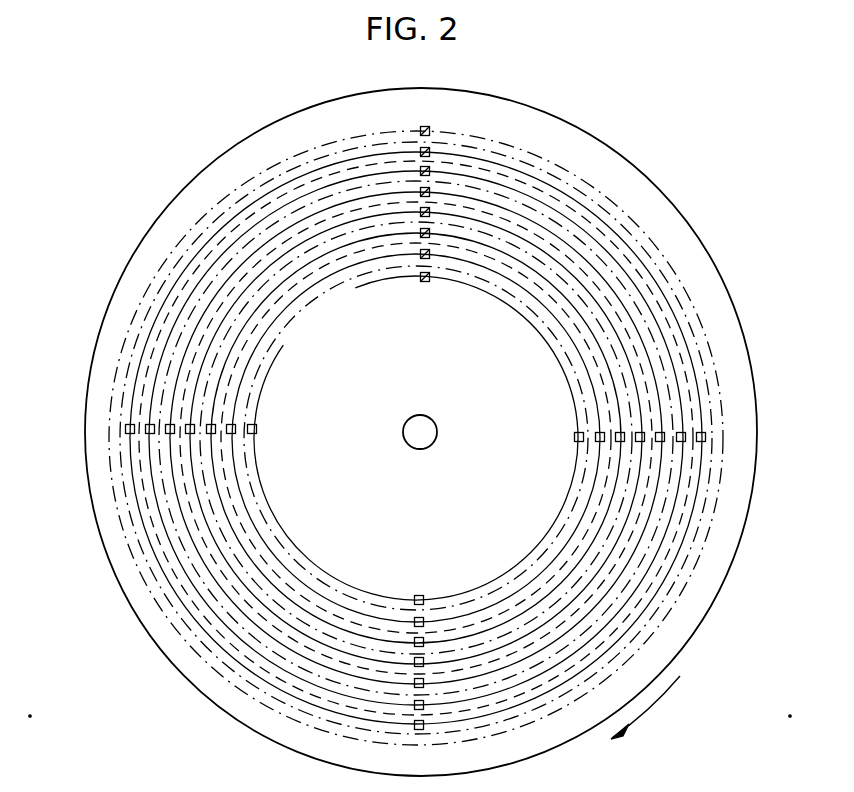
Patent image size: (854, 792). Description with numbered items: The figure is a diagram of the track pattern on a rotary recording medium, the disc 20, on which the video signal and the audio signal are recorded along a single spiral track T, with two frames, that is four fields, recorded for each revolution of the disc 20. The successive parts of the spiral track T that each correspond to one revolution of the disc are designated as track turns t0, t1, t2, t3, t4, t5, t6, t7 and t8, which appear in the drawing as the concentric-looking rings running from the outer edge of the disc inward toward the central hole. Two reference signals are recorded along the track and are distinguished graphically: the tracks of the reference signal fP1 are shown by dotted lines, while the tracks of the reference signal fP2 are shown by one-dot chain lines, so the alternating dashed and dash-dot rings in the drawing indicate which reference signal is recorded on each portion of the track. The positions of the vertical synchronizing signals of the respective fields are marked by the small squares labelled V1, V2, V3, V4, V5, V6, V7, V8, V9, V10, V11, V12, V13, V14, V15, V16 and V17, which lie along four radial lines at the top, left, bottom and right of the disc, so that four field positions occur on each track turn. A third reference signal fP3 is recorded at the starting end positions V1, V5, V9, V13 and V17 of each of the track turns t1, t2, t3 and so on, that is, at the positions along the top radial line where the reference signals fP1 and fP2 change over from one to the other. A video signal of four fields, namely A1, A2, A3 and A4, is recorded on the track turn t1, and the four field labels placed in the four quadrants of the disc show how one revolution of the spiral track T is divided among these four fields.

The disc 20 is at (725, 283).
The spiral track T is at (232, 203).
The track turn t0 is at (526, 142).
The track turn t1 is at (335, 143).
The track turn t2 is at (378, 155).
The track turn t3 is at (305, 200).
The track turn t4 is at (222, 232).
The track turn t5 is at (302, 255).
The track turn t6 is at (280, 303).
The track turn t7 is at (270, 345).
The track turn t8 is at (377, 280).
The field A1 is at (166, 287).
The field A2 is at (178, 572).
The field A3 is at (650, 585).
The field A4 is at (672, 312).
The reference signal fP1 is at (150, 300).
The reference signal fP2 is at (152, 326).
The third reference signal fP3 is at (420, 126).
The vertical synchronizing signal position V1 is at (430, 128).
The vertical synchronizing signal position V2 is at (125, 429).
The vertical synchronizing signal position V3 is at (419, 730).
The vertical synchronizing signal position V4 is at (706, 438).
The vertical synchronizing signal position V5 is at (431, 151).
The vertical synchronizing signal position V6 is at (147, 431).
The vertical synchronizing signal position V7 is at (414, 704).
The vertical synchronizing signal position V8 is at (682, 441).
The vertical synchronizing signal position V9 is at (431, 171).
The vertical synchronizing signal position V10 is at (167, 422).
The vertical synchronizing signal position V11 is at (414, 682).
The vertical synchronizing signal position V12 is at (662, 432).
The vertical synchronizing signal position V13 is at (431, 192).
The vertical synchronizing signal position V14 is at (187, 432).
The vertical synchronizing signal position V15 is at (414, 660).
The vertical synchronizing signal position V16 is at (640, 432).
The vertical synchronizing signal position V17 is at (431, 212).